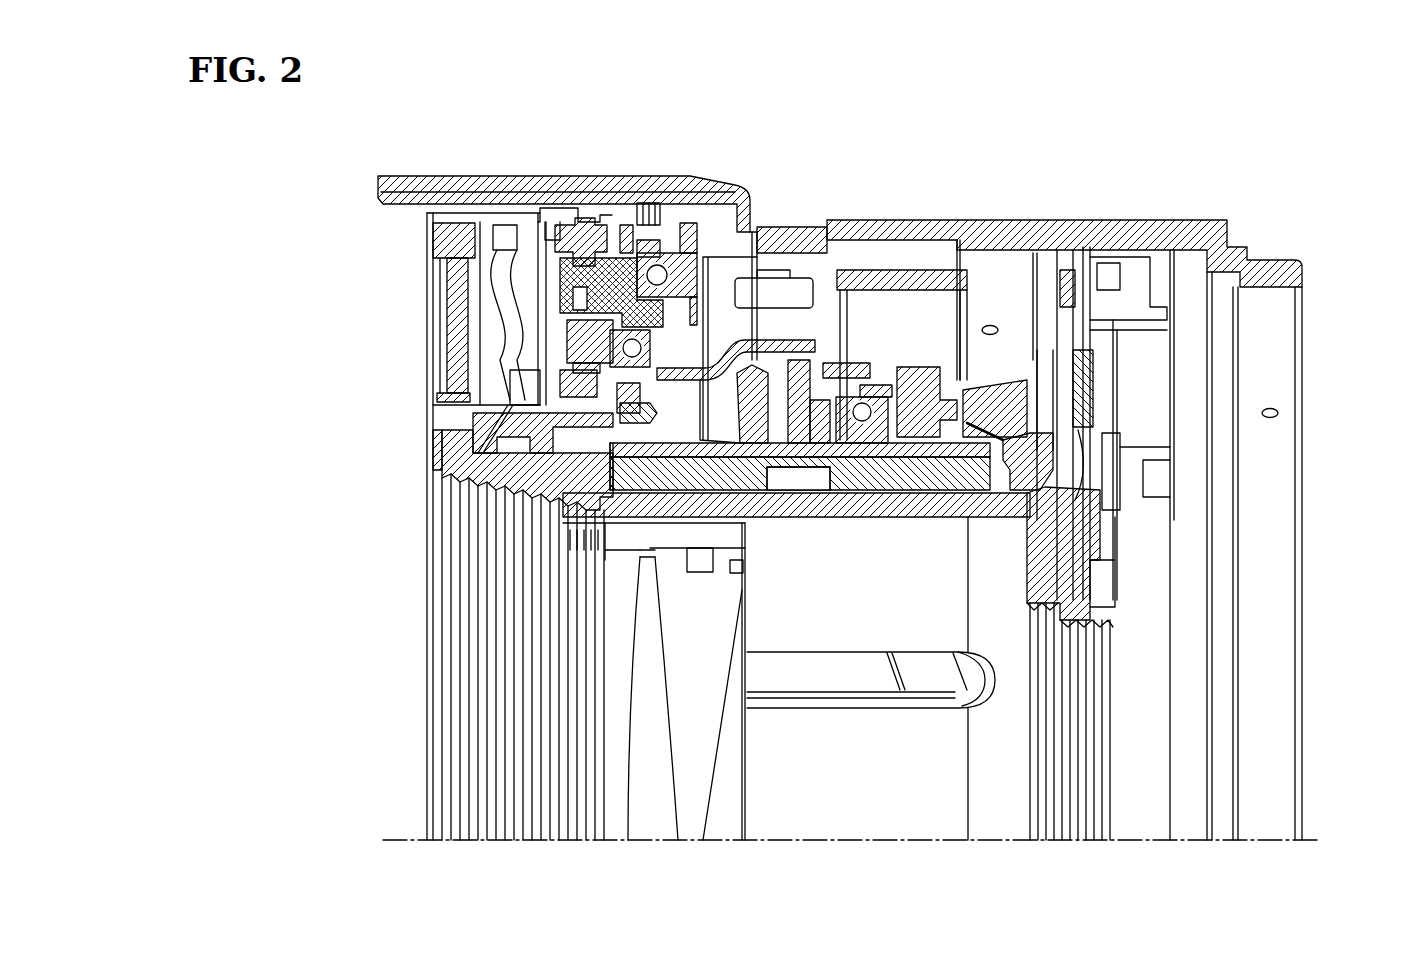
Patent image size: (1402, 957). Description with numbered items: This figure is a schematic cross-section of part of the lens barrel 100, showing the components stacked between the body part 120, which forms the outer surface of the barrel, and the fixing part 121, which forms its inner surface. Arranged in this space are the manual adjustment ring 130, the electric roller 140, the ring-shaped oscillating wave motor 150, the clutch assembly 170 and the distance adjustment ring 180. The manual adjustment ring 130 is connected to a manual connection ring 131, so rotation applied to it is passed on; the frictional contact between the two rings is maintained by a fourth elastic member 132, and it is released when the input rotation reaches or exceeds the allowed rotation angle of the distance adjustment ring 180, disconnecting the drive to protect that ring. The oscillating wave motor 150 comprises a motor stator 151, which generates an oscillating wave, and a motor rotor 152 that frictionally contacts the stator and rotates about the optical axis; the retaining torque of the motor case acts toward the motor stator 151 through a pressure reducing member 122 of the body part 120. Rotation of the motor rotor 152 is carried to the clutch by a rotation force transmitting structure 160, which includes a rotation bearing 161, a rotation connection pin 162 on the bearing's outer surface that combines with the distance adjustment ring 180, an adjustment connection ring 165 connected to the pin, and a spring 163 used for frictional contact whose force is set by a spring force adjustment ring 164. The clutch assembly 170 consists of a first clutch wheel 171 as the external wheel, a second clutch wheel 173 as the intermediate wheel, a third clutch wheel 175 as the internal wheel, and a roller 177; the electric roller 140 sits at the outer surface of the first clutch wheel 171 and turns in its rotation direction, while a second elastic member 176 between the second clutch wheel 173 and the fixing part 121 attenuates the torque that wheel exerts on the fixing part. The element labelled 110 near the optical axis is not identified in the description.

The lens barrel 100 is at (1256, 160).
The shaft 110 is at (688, 818).
The body part 120 is at (1138, 230).
The fixing part 121 is at (520, 478).
The pressure reducing member 122 is at (1068, 290).
The manual adjustment ring 130 is at (591, 220).
The manual connection ring 131 is at (639, 218).
The fourth elastic member 132 is at (655, 215).
The electric roller 140 is at (565, 222).
The ring-shaped oscillating wave motor 150 is at (1027, 127).
The motor stator 151 is at (1007, 390).
The motor rotor 152 is at (948, 375).
The rotation force transmitting structure 160 is at (920, 127).
The rotation bearing 161 is at (895, 375).
The rotation connection pin 162 is at (860, 370).
The spring 163 is at (800, 355).
The spring force adjustment ring 164 is at (758, 370).
The adjustment connection ring 165 is at (625, 398).
The clutch assembly 170 is at (340, 248).
The first clutch wheel 171 is at (583, 285).
The second clutch wheel 173 is at (570, 332).
The third clutch wheel 175 is at (567, 363).
The second elastic member 176 is at (808, 295).
The roller 177 is at (580, 328).
The distance adjustment ring 180 is at (517, 422).